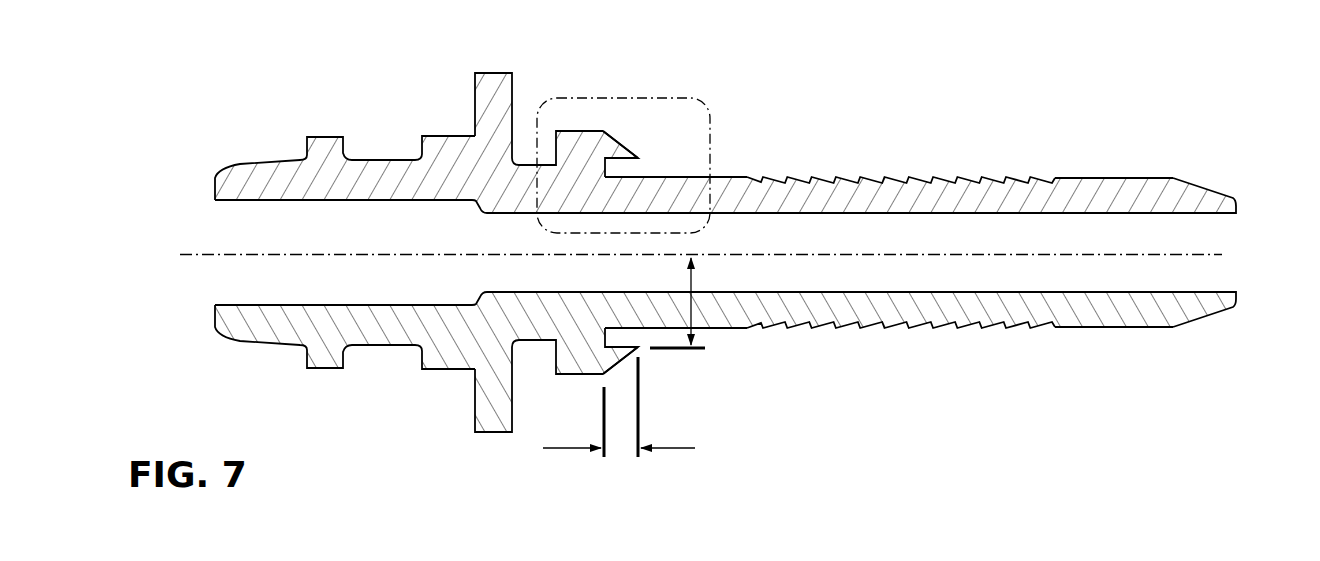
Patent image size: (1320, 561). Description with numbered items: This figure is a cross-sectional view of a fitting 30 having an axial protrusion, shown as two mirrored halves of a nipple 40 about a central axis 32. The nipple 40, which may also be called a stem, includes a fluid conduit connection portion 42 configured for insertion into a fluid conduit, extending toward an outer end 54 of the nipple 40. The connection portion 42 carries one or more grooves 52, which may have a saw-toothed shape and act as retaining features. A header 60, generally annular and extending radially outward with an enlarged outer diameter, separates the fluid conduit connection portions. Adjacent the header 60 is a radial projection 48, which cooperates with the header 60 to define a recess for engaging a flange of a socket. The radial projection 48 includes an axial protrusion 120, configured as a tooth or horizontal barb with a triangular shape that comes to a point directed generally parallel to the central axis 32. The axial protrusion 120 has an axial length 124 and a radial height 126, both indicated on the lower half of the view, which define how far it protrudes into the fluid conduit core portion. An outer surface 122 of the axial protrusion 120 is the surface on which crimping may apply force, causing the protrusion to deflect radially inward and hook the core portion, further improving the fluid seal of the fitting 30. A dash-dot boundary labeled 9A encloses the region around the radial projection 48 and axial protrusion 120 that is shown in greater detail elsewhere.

The fitting 30 is at (951, 97).
The nipple 40 is at (369, 102).
The header 60 is at (495, 92).
The radial projection 48 is at (578, 138).
The axial protrusion 120 is at (646, 146).
The outer surface 122 is at (625, 157).
The detail region of FIG. 9A is at (657, 98).
The grooves 52 is at (861, 169).
The fluid conduit connection portion 42 is at (1073, 188).
The outer end 54 is at (1242, 198).
The central axis 32 is at (1177, 256).
The radial height 126 is at (692, 280).
The axial length 124 is at (670, 443).